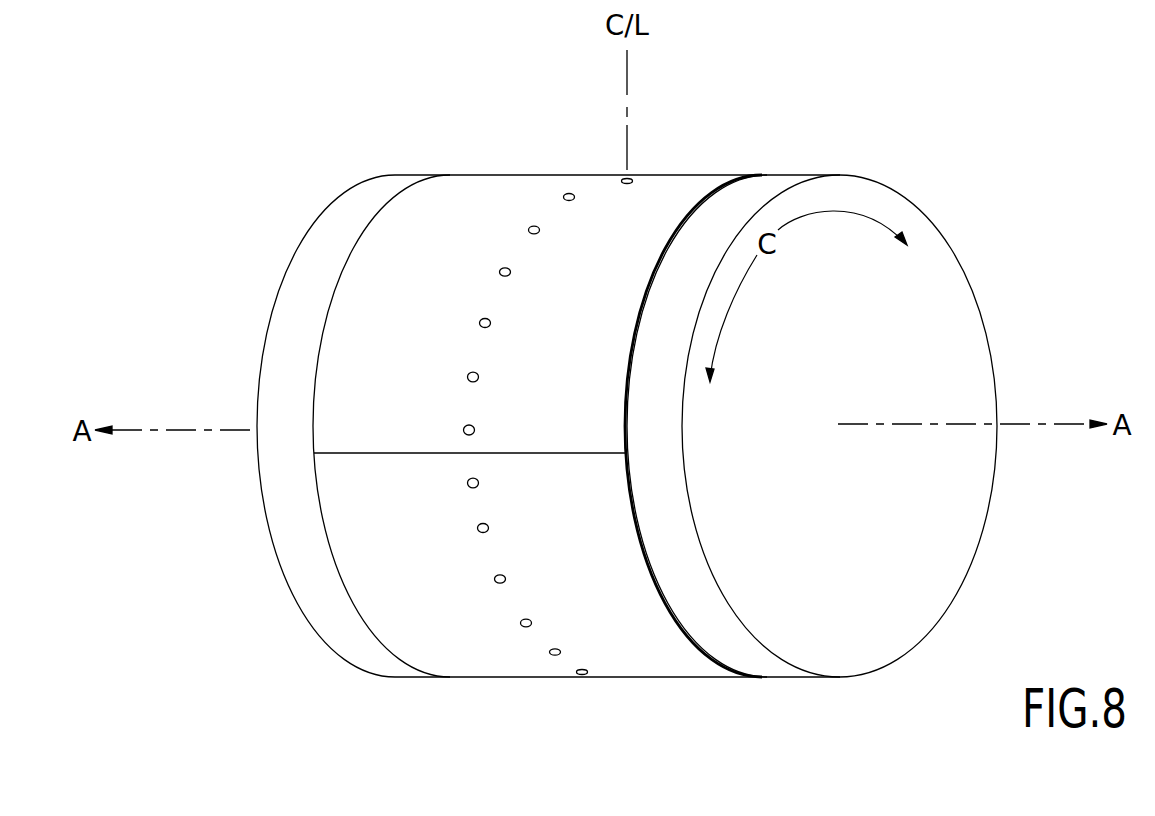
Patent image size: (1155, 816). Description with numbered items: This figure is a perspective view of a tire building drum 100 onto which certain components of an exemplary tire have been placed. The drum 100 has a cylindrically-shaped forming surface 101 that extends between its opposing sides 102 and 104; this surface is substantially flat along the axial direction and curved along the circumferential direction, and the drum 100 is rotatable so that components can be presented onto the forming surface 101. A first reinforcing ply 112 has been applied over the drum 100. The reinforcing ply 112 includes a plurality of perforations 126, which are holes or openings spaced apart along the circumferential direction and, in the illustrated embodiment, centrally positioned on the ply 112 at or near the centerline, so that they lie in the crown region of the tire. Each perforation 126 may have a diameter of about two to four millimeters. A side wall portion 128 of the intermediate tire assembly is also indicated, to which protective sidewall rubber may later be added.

The tire building drum 100 is at (752, 653).
The forming surface 101 is at (421, 680).
The side 102 is at (386, 167).
The side 104 is at (851, 160).
The first reinforcing ply 112 is at (498, 197).
The perforations 126 is at (465, 428).
The side wall portion 128 is at (586, 455).